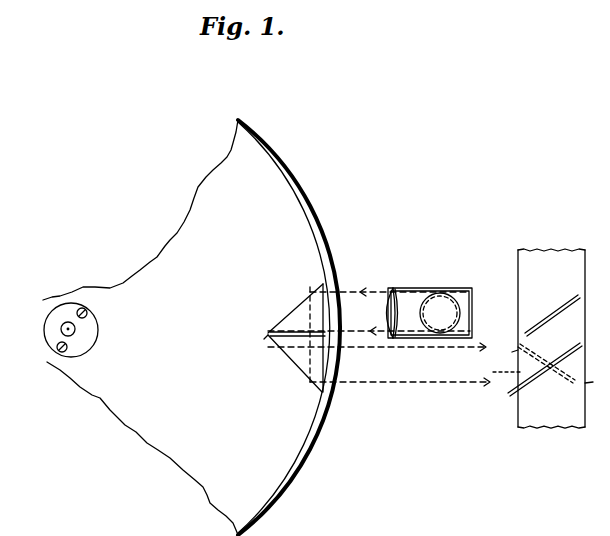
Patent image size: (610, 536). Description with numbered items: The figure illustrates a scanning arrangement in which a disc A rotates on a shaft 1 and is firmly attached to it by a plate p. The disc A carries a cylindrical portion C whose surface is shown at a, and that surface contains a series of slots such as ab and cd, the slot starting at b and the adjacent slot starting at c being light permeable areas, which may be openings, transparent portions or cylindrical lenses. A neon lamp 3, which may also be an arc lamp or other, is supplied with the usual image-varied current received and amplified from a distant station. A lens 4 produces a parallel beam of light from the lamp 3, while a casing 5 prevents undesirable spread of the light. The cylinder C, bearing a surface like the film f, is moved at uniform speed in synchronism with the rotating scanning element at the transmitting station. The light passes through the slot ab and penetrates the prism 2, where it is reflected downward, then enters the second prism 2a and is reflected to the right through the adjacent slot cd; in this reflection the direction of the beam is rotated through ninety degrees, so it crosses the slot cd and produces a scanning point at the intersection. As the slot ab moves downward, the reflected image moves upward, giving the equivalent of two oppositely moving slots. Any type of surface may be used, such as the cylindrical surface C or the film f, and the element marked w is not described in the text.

The shaft 1 is at (77, 305).
The prism 2 is at (323, 284).
The second prism 2a is at (322, 390).
The neon lamp 3 is at (446, 298).
The lens 4 is at (394, 290).
The casing 5 is at (472, 308).
The disc A is at (152, 443).
The cylindrical portion C is at (281, 498).
The plate p is at (73, 360).
The surface of cylindrical portion a is at (518, 333).
The slot end point b is at (580, 293).
The slot end point c is at (537, 377).
The film f is at (535, 428).
The wall w is at (597, 527).